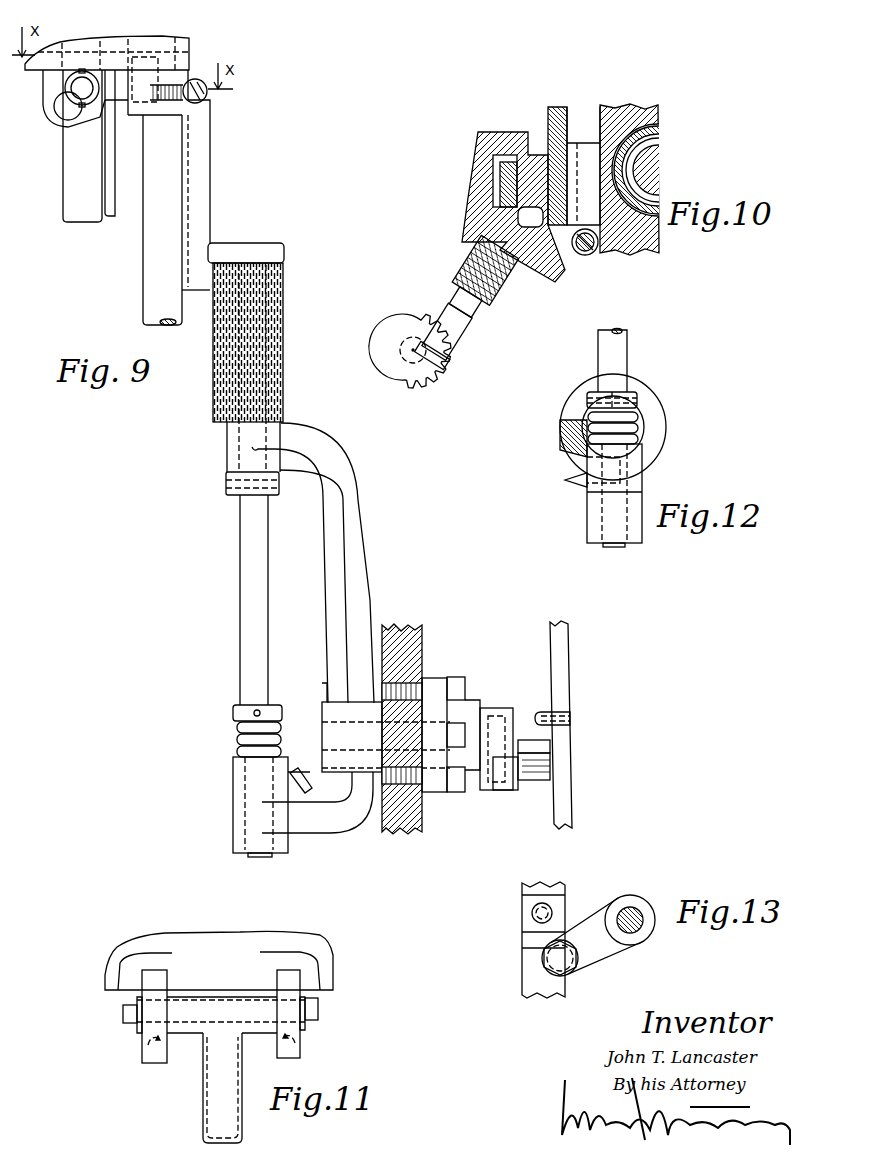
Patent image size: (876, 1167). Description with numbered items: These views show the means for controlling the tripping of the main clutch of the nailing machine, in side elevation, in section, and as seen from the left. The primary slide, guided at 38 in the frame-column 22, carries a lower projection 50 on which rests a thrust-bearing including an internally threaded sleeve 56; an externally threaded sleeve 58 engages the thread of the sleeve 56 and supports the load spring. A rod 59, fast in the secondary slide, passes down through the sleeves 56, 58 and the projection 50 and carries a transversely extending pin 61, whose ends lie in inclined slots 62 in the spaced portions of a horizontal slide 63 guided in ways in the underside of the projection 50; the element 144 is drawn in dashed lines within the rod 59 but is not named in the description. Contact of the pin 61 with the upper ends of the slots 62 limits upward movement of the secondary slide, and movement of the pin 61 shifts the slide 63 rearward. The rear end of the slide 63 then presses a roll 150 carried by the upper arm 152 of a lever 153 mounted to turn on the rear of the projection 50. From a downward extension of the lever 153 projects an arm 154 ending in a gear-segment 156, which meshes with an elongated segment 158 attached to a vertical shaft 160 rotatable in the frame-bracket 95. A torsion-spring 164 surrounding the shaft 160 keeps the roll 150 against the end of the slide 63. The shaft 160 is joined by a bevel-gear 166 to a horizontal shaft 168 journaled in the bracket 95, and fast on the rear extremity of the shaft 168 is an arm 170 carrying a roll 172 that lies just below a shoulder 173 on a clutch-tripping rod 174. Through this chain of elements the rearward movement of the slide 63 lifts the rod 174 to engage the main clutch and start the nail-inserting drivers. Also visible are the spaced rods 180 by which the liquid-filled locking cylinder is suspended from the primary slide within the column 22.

In FIG. 9, the frame-column 22 is at (423, 650).
In FIG. 10, the frame-column 22 is at (478, 148).
In FIG. 10, the guide 38 is at (470, 197).
In FIG. 9, the lower projection 50 is at (188, 42).
In FIG. 10, the lower projection 50 is at (553, 152).
In FIG. 11, the lower projection 50 is at (330, 952).
In FIG. 10, the internally threaded sleeve 56 is at (660, 140).
In FIG. 10, the externally threaded sleeve 58 is at (660, 162).
In FIG. 9, the rod 59 is at (72, 224).
In FIG. 10, the rod 59 is at (660, 185).
In FIG. 11, the rod 59 is at (218, 1107).
In FIG. 9, the transversely extending pin 61 is at (80, 88).
In FIG. 11, the transversely extending pin 61 is at (128, 1020).
In FIG. 9, the inclined slots 62 is at (62, 108).
In FIG. 11, the inclined slots 62 is at (150, 1040).
In FIG. 9, the slide 63 is at (118, 95).
In FIG. 10, the slide 63 is at (588, 142).
In FIG. 11, the slide 63 is at (250, 1034).
In FIG. 9, the frame-bracket 95 is at (365, 552).
In FIG. 12, the frame-bracket 95 is at (590, 520).
In FIG. 9, the insert strip 144 is at (118, 205).
In FIG. 11, the insert strip 144 is at (225, 1092).
In FIG. 9, the roll 150 is at (162, 75).
In FIG. 10, the roll 150 is at (586, 256).
In FIG. 9, the upper arm 152 is at (168, 115).
In FIG. 10, the upper arm 152 is at (587, 268).
In FIG. 9, the lever 153 is at (200, 232).
In FIG. 9, the arm 154 is at (217, 318).
In FIG. 10, the arm 154 is at (505, 335).
In FIG. 10, the gear-segment 156 is at (468, 362).
In FIG. 9, the elongated segment 158 is at (285, 290).
In FIG. 10, the elongated segment 158 is at (438, 362).
In FIG. 9, the vertical shaft 160 is at (240, 580).
In FIG. 10, the vertical shaft 160 is at (413, 350).
In FIG. 12, the vertical shaft 160 is at (627, 343).
In FIG. 9, the torsion-spring 164 is at (238, 735).
In FIG. 12, the torsion-spring 164 is at (640, 426).
In FIG. 9, the bevel-gear 166 is at (296, 783).
In FIG. 12, the bevel-gear 166 is at (578, 463).
In FIG. 9, the horizontal shaft 168 is at (348, 720).
In FIG. 12, the horizontal shaft 168 is at (642, 441).
In FIG. 13, the horizontal shaft 168 is at (640, 930).
In FIG. 9, the arm 170 is at (497, 795).
In FIG. 13, the arm 170 is at (598, 918).
In FIG. 9, the roll 172 is at (542, 785).
In FIG. 13, the roll 172 is at (567, 975).
In FIG. 9, the shoulder 173 is at (540, 757).
In FIG. 13, the shoulder 173 is at (535, 948).
In FIG. 9, the clutch-tripping rod 174 is at (563, 680).
In FIG. 13, the clutch-tripping rod 174 is at (522, 995).
In FIG. 9, the spaced rods 180 is at (144, 303).